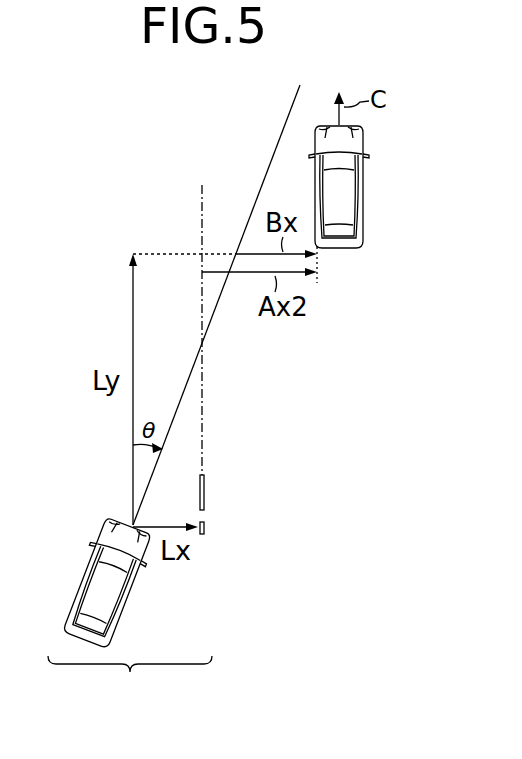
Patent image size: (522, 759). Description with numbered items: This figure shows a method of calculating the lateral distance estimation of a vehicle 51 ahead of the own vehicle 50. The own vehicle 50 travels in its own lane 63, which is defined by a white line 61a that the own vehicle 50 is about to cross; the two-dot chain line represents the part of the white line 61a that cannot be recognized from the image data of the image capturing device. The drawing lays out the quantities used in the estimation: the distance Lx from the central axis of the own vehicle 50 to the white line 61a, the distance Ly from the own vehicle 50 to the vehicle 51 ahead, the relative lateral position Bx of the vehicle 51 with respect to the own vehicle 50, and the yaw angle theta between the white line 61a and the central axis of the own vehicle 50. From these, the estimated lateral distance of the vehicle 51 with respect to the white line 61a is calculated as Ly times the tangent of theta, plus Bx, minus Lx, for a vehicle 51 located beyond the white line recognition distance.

The own vehicle 50 is at (117, 595).
The vehicle ahead of the own vehicle 51 is at (343, 196).
The white line 61a is at (205, 490).
The own lane 63 is at (130, 679).